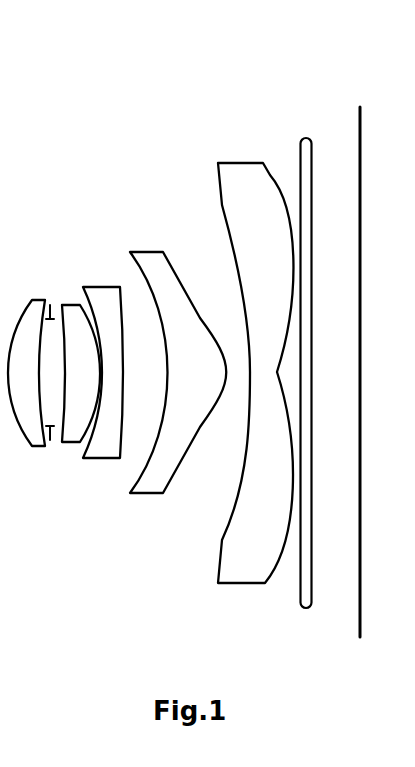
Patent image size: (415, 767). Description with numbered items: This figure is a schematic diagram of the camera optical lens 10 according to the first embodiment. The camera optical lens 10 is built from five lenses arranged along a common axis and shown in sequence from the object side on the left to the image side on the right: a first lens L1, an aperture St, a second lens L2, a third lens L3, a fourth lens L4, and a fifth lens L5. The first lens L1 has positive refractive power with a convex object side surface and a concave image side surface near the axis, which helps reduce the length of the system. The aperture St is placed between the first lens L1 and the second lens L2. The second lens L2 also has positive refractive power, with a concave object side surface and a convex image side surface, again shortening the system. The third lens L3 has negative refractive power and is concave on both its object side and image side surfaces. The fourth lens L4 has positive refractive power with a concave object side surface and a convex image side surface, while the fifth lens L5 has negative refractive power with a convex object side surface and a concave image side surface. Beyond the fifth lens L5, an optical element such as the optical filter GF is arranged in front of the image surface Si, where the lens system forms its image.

The camera optical lens 10 is at (195, 52).
The first lens L1 is at (29, 360).
The second lens L2 is at (77, 358).
The third lens L3 is at (103, 361).
The fourth lens L4 is at (178, 361).
The fifth lens L5 is at (255, 358).
The aperture st is at (52, 441).
The optical filter GF is at (301, 358).
The image surface Si is at (358, 360).